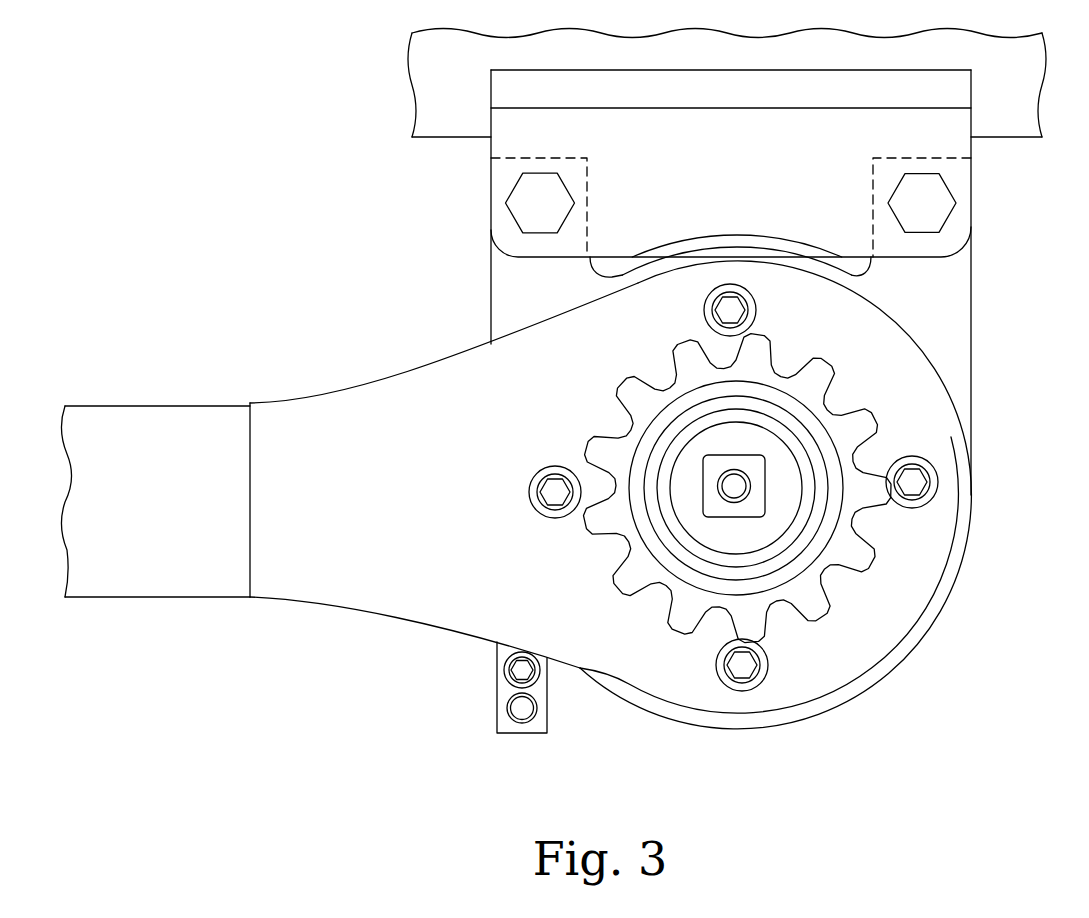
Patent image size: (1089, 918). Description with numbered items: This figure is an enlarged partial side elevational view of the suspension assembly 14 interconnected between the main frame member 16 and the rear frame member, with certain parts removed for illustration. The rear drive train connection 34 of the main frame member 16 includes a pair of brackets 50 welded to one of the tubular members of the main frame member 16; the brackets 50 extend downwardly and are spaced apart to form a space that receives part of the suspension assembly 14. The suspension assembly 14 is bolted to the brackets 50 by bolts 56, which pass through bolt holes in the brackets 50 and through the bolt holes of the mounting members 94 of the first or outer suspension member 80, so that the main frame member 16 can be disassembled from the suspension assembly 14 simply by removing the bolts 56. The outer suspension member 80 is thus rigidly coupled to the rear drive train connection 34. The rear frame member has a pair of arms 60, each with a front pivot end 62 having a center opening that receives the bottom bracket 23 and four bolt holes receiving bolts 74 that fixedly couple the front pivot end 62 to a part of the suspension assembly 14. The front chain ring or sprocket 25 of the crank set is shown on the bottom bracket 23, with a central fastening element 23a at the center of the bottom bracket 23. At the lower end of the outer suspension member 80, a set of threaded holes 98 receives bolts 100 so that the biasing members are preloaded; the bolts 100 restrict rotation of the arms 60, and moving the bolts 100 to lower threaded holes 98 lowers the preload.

The suspension assembly 14 is at (905, 662).
The main frame member 16 is at (410, 80).
The bottom bracket 23 is at (757, 435).
The shaft nut 23a is at (767, 467).
The front chain ring or sprocket 25 is at (876, 543).
The rear drive train connection 34 is at (986, 149).
The brackets 50 is at (488, 148).
The bolts 56 is at (505, 200).
The arms 60 is at (150, 600).
The front pivot end 62 is at (813, 677).
The bolts 74 is at (723, 313).
The first or outer suspension member 80 is at (971, 338).
The mounting members 94 is at (590, 178).
The threaded holes 98 is at (510, 710).
The bolts 100 is at (506, 668).